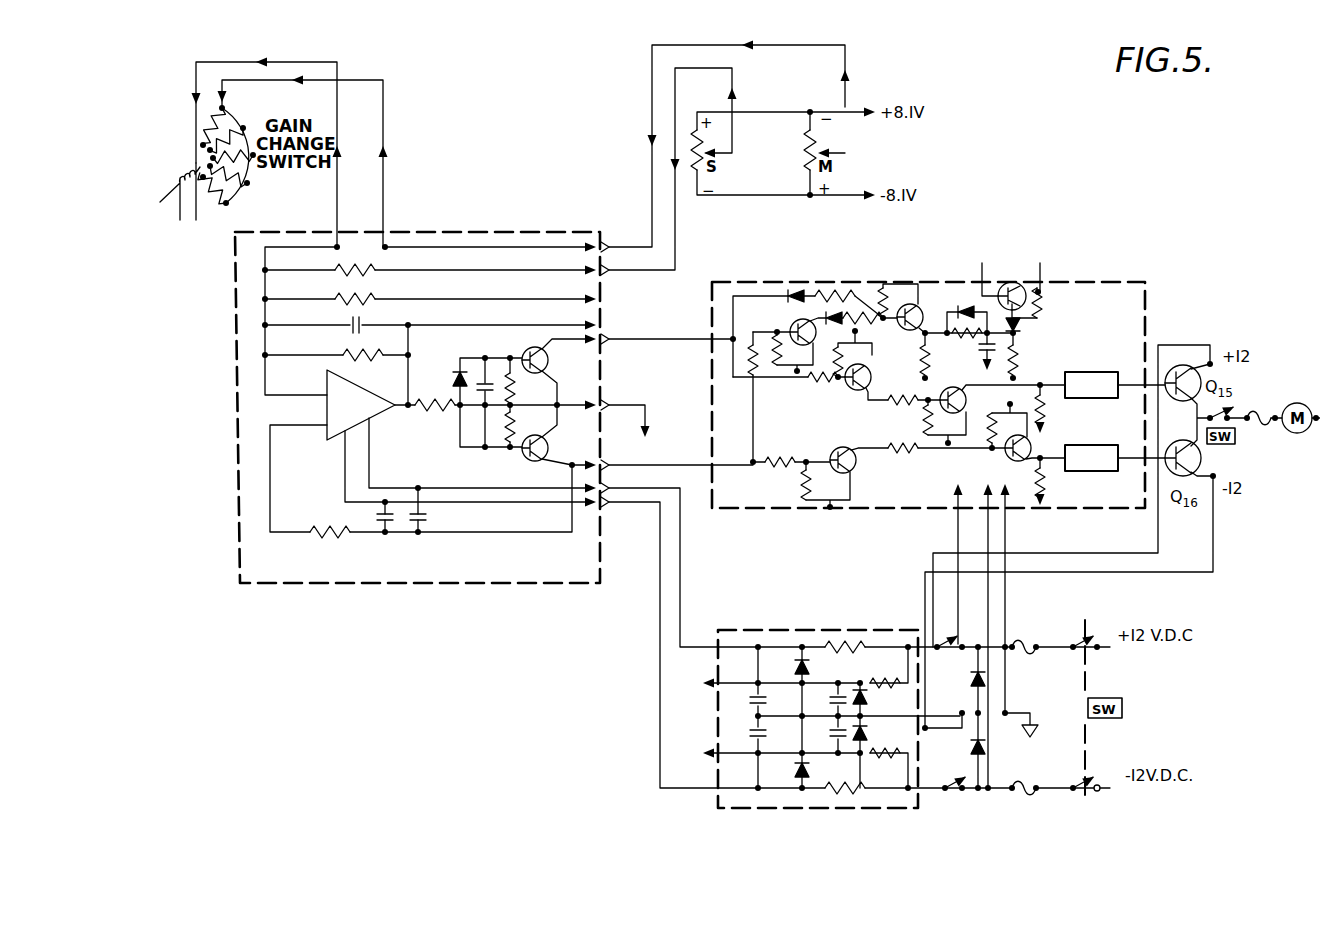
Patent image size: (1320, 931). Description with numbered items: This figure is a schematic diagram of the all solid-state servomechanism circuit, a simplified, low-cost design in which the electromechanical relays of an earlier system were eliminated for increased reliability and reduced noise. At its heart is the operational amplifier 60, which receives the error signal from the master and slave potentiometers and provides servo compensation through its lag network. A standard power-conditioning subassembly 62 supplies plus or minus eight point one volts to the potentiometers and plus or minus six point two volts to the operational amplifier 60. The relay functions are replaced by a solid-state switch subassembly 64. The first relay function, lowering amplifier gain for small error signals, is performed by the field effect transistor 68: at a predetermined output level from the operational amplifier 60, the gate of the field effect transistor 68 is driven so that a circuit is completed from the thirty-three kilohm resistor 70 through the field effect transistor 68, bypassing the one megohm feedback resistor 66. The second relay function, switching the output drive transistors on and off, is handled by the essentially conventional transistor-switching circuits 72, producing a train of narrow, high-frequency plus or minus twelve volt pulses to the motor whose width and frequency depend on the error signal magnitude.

The operational amplifier 60 is at (226, 463).
The power-conditioning subassembly 62 is at (778, 824).
The solid-state switch subassembly 64 is at (1154, 288).
The feedback resistor 66 is at (385, 358).
The field effect transistor 68 is at (1010, 282).
The resistor 70 is at (385, 301).
The transistor-switching circuits 72 is at (1104, 356).